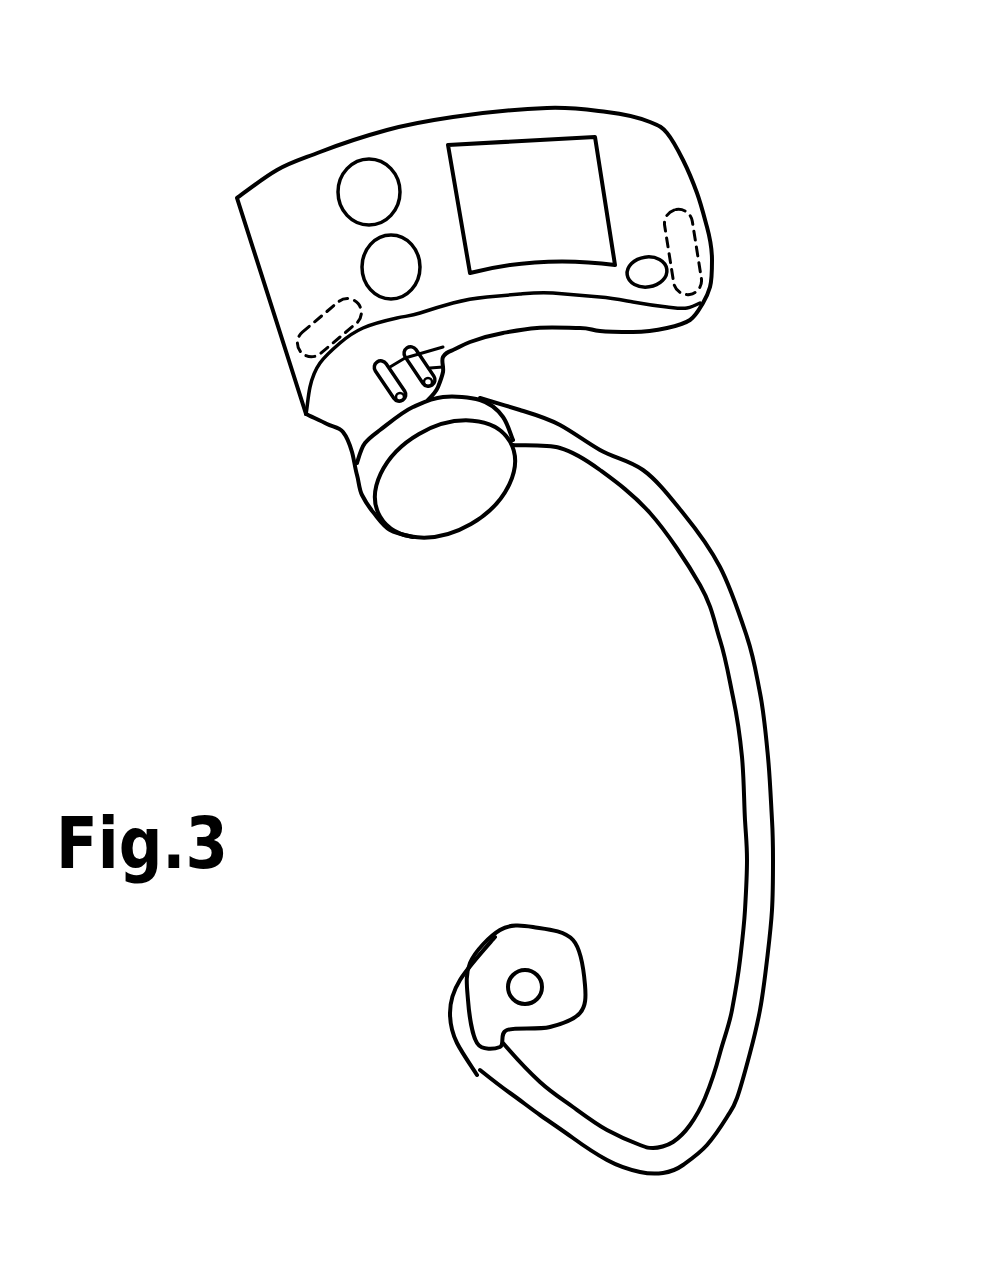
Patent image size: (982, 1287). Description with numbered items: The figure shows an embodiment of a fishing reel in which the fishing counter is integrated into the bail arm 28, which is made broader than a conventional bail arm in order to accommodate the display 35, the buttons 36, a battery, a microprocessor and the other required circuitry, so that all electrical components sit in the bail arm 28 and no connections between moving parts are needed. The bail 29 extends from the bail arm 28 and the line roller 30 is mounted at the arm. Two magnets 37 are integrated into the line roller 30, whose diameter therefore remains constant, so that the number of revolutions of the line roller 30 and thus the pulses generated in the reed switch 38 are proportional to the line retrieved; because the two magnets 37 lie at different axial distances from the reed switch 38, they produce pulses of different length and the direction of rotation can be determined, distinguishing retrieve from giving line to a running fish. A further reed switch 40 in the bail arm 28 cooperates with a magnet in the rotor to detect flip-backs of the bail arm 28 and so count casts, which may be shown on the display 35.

The bail arm 28 is at (632, 140).
The bail 29 is at (760, 760).
The line roller 30 is at (340, 413).
The display 35 is at (537, 157).
The control buttons 36 is at (362, 265).
The magnets 37 is at (443, 347).
The reed switch 38 is at (307, 337).
The reed switch 40 is at (700, 241).